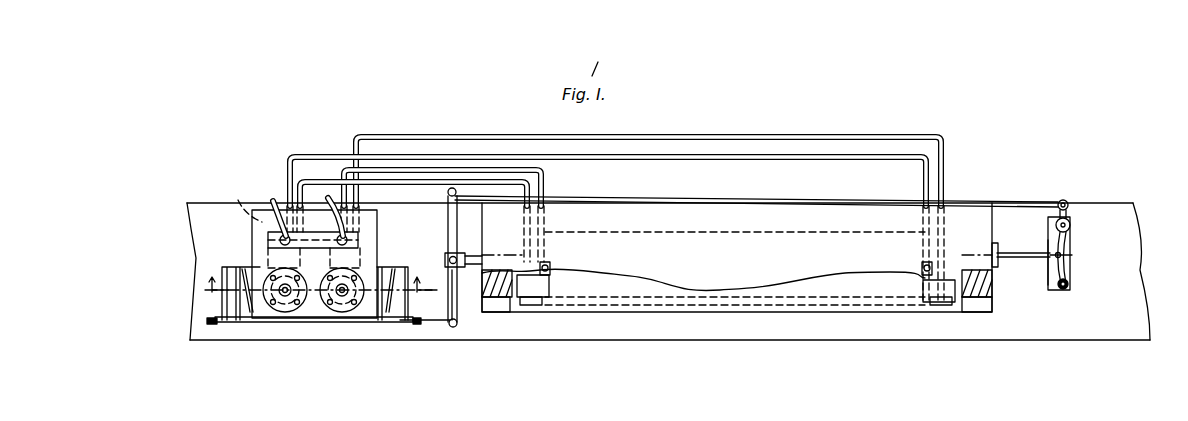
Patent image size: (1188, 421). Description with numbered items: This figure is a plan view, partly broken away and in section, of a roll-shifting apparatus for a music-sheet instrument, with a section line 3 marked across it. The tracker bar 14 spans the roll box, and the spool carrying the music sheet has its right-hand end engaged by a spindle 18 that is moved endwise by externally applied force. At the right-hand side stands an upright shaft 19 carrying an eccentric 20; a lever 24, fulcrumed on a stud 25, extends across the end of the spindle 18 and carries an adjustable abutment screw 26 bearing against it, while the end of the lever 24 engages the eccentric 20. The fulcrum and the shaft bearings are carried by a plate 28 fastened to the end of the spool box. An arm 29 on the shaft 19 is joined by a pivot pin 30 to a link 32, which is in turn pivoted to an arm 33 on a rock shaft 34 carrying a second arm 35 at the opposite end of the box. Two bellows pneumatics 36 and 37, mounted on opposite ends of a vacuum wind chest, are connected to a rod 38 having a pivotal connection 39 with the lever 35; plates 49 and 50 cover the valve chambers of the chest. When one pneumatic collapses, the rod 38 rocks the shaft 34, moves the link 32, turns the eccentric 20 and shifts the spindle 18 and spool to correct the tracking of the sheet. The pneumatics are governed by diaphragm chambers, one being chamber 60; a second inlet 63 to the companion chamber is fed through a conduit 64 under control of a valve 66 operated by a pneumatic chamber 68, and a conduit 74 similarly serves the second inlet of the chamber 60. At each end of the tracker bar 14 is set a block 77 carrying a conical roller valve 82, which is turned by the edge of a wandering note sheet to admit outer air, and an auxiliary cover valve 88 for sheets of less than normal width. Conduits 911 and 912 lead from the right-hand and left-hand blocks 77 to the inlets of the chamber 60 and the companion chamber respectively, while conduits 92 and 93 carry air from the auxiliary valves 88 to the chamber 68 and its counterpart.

The section line 3 is at (316, 290).
The tracker bar 14 is at (975, 305).
The spindle 18 is at (1008, 253).
The upright shaft 19 is at (1072, 222).
The eccentric 20 is at (1070, 227).
The lever 24 is at (1070, 266).
The stud 25 is at (1069, 284).
The adjustable abutment screw 26 is at (1074, 254).
The plate 28 is at (1049, 266).
The arm 29 is at (1068, 212).
The pivot pin 30 is at (1062, 200).
The link 32 is at (612, 197).
The arm 33 is at (448, 219).
The rock shaft 34 is at (450, 266).
The second arm 35 is at (452, 303).
The pneumatic 36 is at (222, 267).
The pneumatic 37 is at (447, 258).
The rod 38 is at (433, 326).
The pivotal connection 39 is at (458, 323).
The plate 49 is at (293, 312).
The plate 50 is at (273, 322).
The chamber 60 is at (333, 322).
The second inlet 63 is at (378, 223).
The conduit 64 is at (271, 198).
The valve 66 is at (268, 242).
The chamber 68 is at (237, 202).
The conduit 74 is at (333, 207).
The block 77 is at (545, 272).
The roller valve 82 is at (541, 308).
The cover 88 is at (553, 287).
The conduit 92 is at (289, 156).
The conduit 93 is at (544, 180).
The tube or conduit 911 is at (428, 137).
The conduit 912 is at (324, 181).